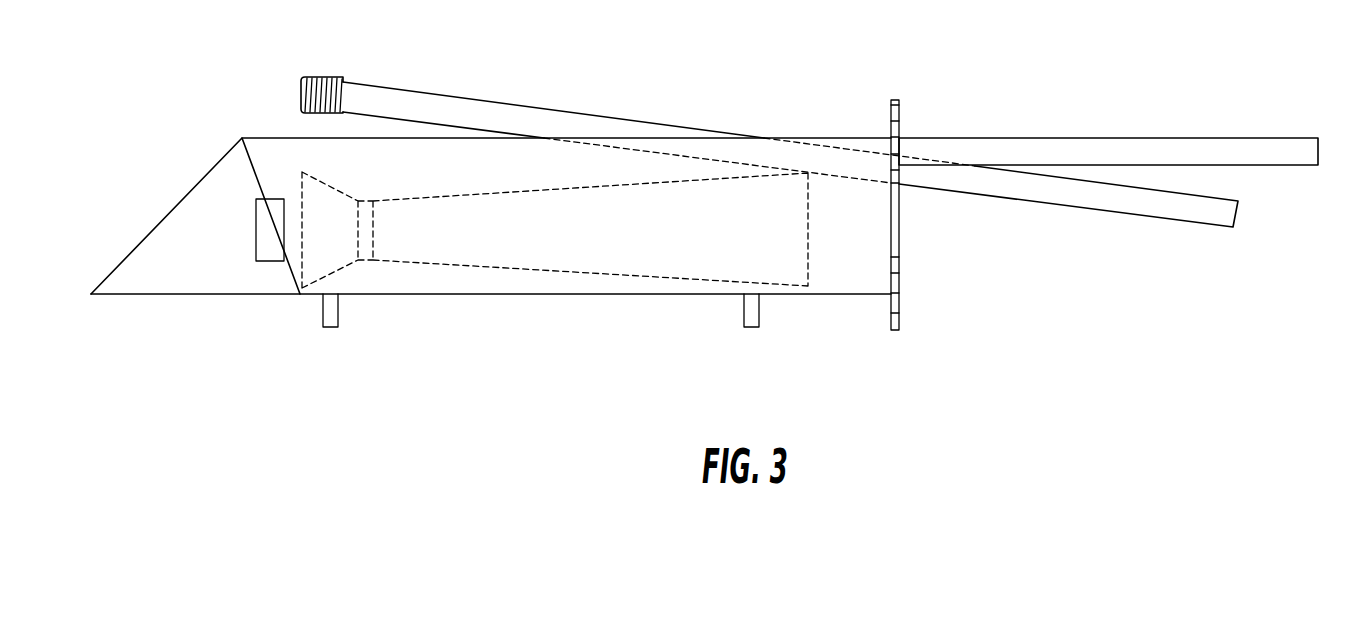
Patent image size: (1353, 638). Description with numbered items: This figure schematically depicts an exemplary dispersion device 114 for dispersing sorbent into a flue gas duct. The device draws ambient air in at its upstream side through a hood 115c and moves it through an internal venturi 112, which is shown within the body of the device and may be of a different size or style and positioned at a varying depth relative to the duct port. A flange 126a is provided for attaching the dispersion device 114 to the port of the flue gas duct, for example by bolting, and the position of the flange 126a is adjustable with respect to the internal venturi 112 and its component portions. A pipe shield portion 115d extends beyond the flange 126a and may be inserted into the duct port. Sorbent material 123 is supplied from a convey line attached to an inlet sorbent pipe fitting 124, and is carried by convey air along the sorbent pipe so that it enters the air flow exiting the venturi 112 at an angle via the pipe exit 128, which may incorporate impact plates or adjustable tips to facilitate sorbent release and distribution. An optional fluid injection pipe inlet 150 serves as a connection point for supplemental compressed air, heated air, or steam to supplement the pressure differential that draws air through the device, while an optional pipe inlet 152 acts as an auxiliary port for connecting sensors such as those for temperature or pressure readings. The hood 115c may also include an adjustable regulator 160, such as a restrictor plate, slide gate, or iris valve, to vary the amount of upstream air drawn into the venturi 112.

The venturi 112 is at (443, 190).
The dispersion device 114 is at (672, 45).
The hood 115c is at (172, 212).
The pipe shield portion 115d is at (1073, 138).
The sorbent material 123 is at (297, 92).
The inlet sorbent pipe fitting 124 is at (318, 77).
The flange 126a is at (890, 100).
The pipe exit 128 is at (1207, 228).
The fluid injection pipe inlet 150 is at (337, 328).
The pipe inlet 152 is at (745, 328).
The adjustable regulator 160 is at (255, 243).